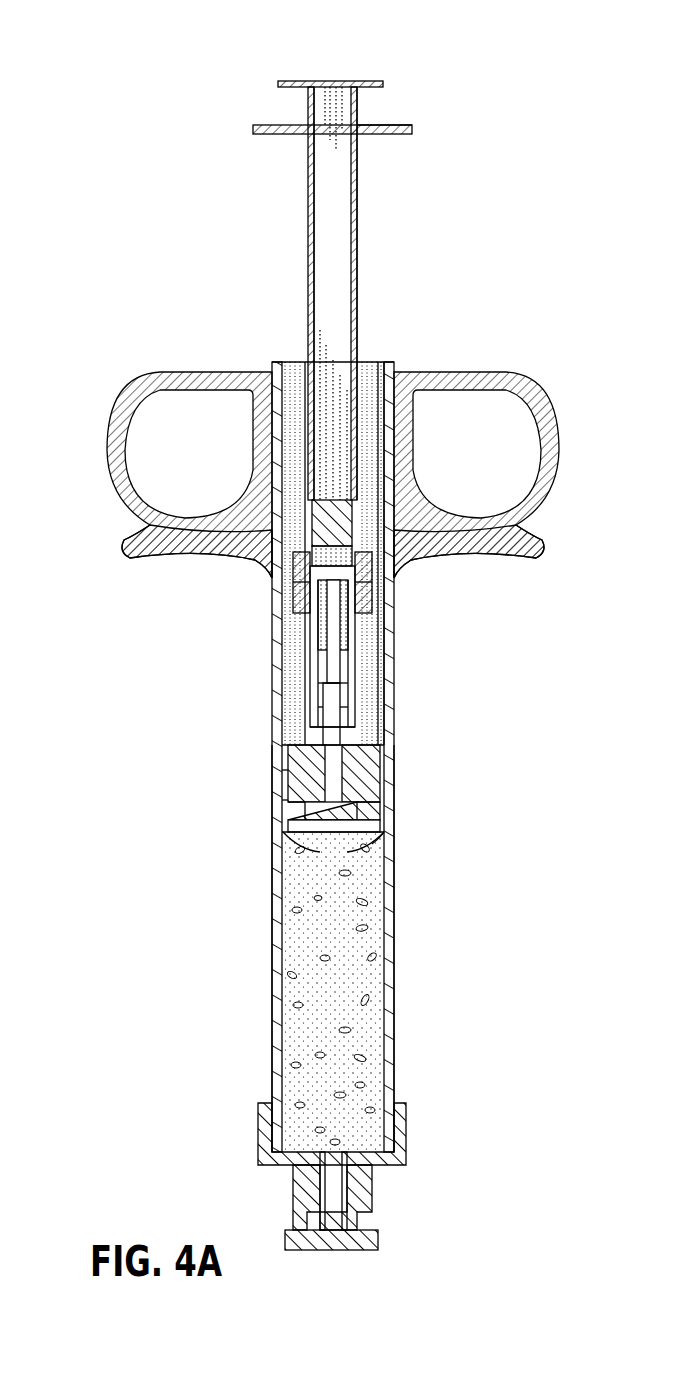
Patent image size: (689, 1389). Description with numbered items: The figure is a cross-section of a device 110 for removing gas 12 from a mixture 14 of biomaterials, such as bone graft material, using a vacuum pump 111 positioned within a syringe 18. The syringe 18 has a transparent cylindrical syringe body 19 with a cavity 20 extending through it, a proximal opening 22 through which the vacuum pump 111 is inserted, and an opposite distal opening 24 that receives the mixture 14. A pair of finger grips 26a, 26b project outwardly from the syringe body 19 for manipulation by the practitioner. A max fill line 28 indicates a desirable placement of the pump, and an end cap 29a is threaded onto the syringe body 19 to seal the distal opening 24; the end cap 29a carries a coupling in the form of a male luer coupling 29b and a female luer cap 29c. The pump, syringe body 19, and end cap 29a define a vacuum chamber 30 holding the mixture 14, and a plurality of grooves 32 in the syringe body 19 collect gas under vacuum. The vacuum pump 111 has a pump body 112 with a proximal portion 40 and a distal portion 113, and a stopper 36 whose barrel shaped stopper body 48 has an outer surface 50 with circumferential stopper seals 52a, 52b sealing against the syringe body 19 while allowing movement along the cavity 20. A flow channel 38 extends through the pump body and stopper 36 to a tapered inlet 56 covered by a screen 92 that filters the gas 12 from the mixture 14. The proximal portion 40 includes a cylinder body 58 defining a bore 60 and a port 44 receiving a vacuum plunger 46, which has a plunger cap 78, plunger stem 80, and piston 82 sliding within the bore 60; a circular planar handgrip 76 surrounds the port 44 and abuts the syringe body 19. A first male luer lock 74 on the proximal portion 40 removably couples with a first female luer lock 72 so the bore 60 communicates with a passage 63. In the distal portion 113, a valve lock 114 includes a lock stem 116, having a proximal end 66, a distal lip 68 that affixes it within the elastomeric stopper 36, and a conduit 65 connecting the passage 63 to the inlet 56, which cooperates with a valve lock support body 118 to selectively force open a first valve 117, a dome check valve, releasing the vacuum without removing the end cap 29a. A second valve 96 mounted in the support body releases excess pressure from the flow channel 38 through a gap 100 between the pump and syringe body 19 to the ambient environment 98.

The device 110 is at (95, 48).
The vacuum pump 111 is at (190, 107).
The gas 12 is at (355, 900).
The mixture 14 is at (360, 972).
The syringe 18 is at (316, 457).
The syringe body 19 is at (275, 924).
The cavity 20 is at (282, 362).
The proximal opening 22 is at (388, 362).
The distal opening 24 is at (376, 1160).
The finger grip 26a is at (192, 372).
The finger grip 26b is at (470, 372).
The max fill line 28 is at (300, 828).
The end cap 29a is at (258, 1130).
The male luer coupling 29b is at (293, 1183).
The female luer cap 29c is at (320, 1252).
The vacuum chamber 30 is at (332, 992).
The grooves 32 is at (393, 998).
The stopper 36 is at (325, 718).
The flow channel 38 is at (346, 172).
The proximal portion 40 is at (307, 273).
The port 44 is at (354, 128).
The vacuum plunger 46 is at (288, 80).
The stopper body 48 is at (372, 776).
The outer surface 50 is at (307, 788).
The stopper seal 52a is at (283, 768).
The stopper seal 52b is at (285, 800).
The inlet 56 is at (356, 818).
The cylinder body 58 is at (357, 250).
The bore 60 is at (372, 572).
The passage 63 is at (312, 655).
The conduit 65 is at (345, 795).
The proximal end 66 is at (320, 695).
The distal lip 68 is at (305, 838).
The first female luer lock 72 is at (293, 590).
The first male luer lock 74 is at (300, 566).
The handgrip 76 is at (253, 129).
The plunger cap 78 is at (305, 81).
The plunger stem 80 is at (308, 105).
The piston 82 is at (333, 498).
The screen 92 is at (380, 844).
The second valve 96 is at (345, 665).
The ambient environment 98 is at (414, 299).
The gap 100 is at (348, 672).
The pump body 112 is at (300, 547).
The distal portion 113 is at (306, 648).
The valve lock 114 is at (358, 715).
The lock stem 116 is at (380, 748).
The first valve 117 is at (358, 693).
The valve lock support body 118 is at (372, 628).